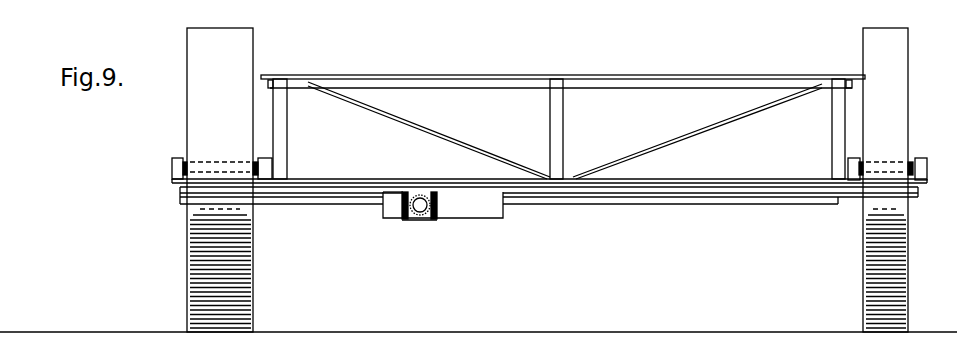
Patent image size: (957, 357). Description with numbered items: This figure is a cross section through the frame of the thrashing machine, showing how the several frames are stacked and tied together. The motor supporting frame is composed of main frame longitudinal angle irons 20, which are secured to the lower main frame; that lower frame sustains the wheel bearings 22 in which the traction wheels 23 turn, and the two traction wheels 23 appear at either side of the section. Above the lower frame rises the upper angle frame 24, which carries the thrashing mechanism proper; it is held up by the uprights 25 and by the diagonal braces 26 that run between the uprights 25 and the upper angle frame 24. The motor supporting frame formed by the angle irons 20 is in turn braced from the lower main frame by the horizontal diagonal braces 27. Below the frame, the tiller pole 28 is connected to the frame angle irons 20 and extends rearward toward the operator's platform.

The main frame longitudinal angle irons 20 is at (403, 204).
The wheel bearings 22 is at (178, 158).
The traction wheels 23 is at (252, 31).
The upper angle frame 24 is at (531, 79).
The uprights 25 is at (283, 133).
The diagonal braces 26 is at (475, 143).
The horizontal diagonal braces 27 is at (362, 183).
The tiller pole 28 is at (420, 221).